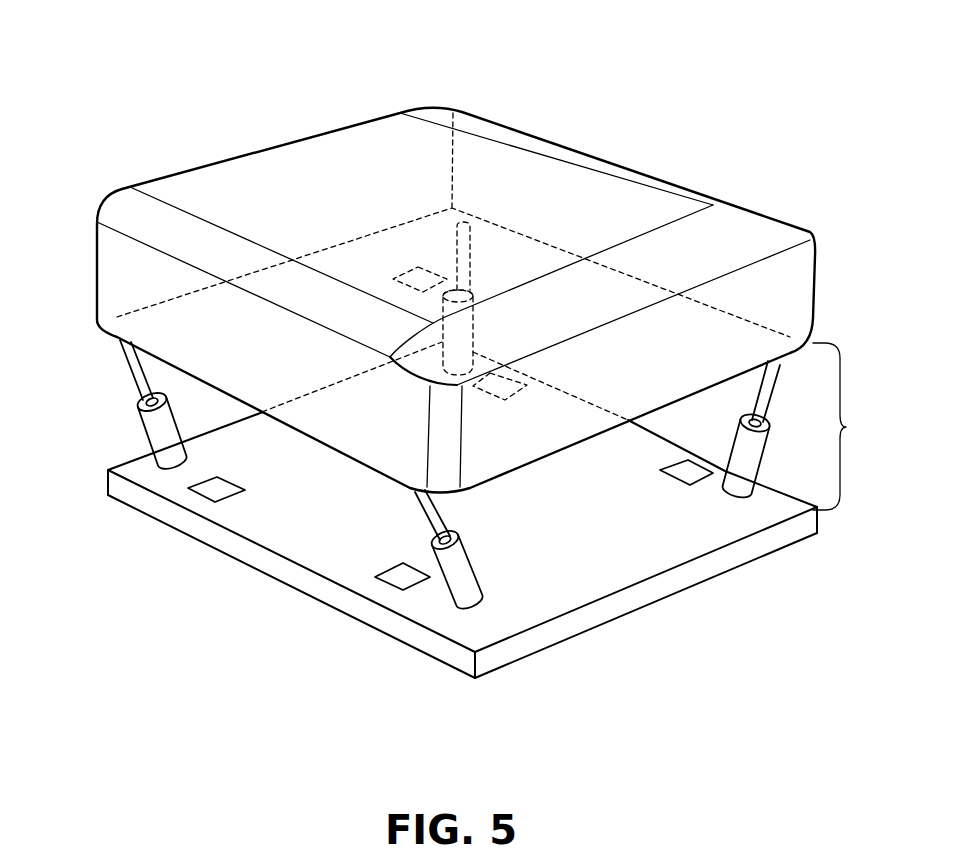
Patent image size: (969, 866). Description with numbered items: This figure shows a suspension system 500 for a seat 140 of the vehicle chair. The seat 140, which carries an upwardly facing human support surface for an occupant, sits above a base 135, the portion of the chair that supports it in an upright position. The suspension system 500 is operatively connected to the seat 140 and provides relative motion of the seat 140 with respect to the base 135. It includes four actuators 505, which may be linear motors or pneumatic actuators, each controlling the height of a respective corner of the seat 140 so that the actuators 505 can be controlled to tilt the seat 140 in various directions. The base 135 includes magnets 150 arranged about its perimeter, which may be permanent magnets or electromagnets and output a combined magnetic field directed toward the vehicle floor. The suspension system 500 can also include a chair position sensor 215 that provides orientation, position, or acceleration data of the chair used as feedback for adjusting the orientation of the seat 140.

The seat 140 is at (295, 177).
The chair position sensor 215 is at (410, 268).
The magnets 150 is at (527, 383).
The actuators 505 is at (473, 333).
The base 135 is at (336, 526).
The suspension system 500 is at (857, 426).